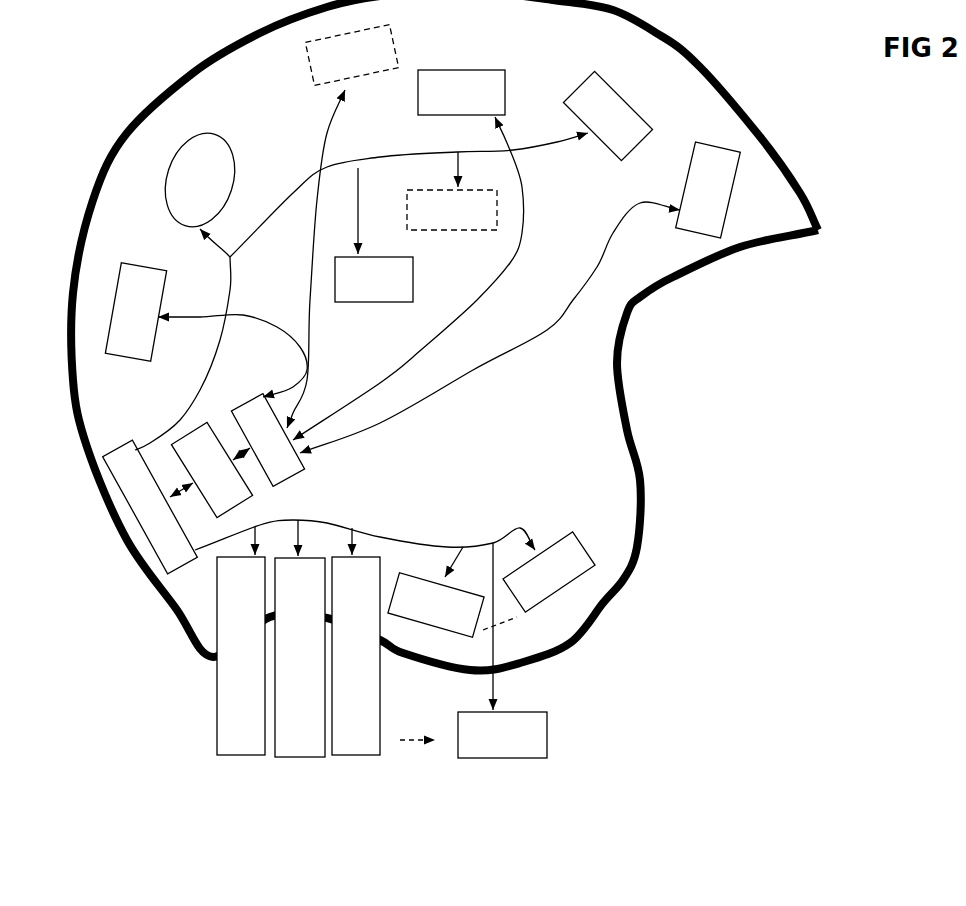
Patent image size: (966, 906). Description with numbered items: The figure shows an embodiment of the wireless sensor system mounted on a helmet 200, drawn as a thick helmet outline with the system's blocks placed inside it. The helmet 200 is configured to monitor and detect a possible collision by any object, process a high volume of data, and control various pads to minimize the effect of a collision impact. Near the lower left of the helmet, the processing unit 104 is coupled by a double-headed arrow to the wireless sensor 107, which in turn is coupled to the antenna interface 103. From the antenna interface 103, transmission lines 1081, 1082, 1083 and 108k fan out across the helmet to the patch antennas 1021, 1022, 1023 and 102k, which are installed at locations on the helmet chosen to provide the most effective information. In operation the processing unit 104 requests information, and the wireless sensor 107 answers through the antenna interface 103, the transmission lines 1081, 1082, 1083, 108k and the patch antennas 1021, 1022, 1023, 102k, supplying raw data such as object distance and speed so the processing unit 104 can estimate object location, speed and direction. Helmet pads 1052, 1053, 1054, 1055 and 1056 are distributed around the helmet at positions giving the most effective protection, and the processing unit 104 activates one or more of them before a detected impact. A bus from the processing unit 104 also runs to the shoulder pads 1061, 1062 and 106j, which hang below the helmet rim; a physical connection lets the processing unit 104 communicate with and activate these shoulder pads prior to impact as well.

The helmet 200 is at (421, 335).
The patch antenna 1021 is at (115, 300).
The patch antenna 1022 is at (437, 70).
The patch antenna 1023 is at (307, 50).
The patch antenna 102k is at (750, 205).
The antenna interface 103 is at (293, 477).
The processing unit 104 is at (118, 527).
The helmet pad 1052 is at (413, 625).
The helmet pad 1053 is at (163, 180).
The helmet pad 1054 is at (345, 302).
The helmet pad 1055 is at (415, 230).
The helmet pad 1056 is at (600, 75).
The shoulder pad 1061 is at (224, 755).
The shoulder pad 1062 is at (358, 755).
The shoulder pad 106j is at (475, 758).
The wireless sensor 107 is at (212, 420).
The transmission line 1081 is at (240, 320).
The transmission line 1082 is at (522, 213).
The transmission line 1083 is at (327, 162).
The transmission line 108k is at (473, 370).